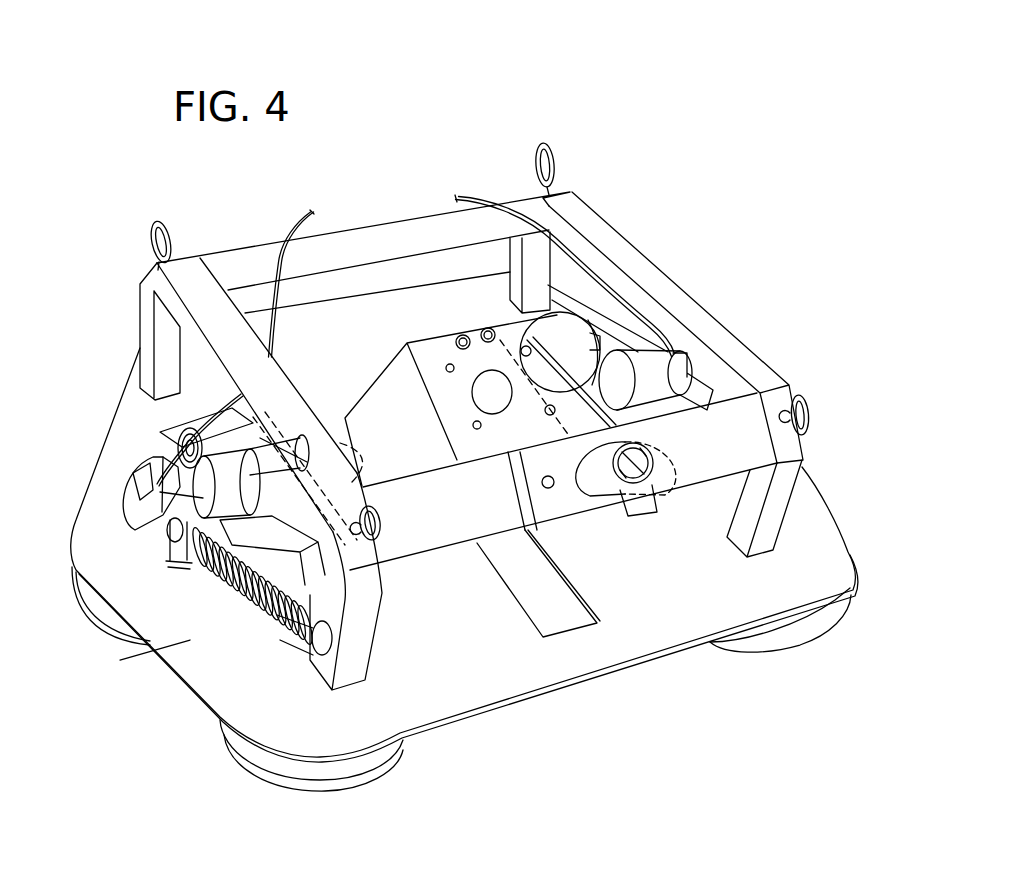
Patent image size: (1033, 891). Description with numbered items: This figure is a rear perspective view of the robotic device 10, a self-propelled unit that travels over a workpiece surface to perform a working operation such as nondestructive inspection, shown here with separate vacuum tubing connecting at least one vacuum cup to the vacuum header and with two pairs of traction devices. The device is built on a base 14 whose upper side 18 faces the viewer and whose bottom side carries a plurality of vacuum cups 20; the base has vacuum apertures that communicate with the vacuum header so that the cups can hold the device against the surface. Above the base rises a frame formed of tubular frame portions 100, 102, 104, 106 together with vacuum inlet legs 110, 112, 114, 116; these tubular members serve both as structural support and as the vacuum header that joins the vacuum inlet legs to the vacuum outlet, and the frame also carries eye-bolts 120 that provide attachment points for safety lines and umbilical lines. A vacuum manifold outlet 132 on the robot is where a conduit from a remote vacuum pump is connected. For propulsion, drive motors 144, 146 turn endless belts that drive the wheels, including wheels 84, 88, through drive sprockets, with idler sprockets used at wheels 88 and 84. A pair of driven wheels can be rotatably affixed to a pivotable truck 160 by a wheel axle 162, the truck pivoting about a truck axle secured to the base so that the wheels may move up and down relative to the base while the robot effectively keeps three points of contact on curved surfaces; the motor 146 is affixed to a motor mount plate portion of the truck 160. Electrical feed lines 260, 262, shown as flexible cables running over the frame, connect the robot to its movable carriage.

The robotic device 10 is at (356, 170).
The base 14 is at (186, 687).
The upper side 18 is at (187, 637).
The vacuum cups 20 is at (108, 637).
The wheel 84 is at (672, 495).
The wheel 88 is at (240, 590).
The tubular frame portion 100 is at (632, 267).
The tubular frame portion 102 is at (282, 378).
The tubular frame portion 104 is at (490, 504).
The tubular frame portion 106 is at (264, 249).
The vacuum inlet leg 110 is at (358, 650).
The vacuum inlet leg 112 is at (785, 495).
The vacuum inlet leg 114 is at (140, 328).
The vacuum inlet leg 116 is at (525, 285).
The eye-bolts 120 is at (148, 241).
The vacuum manifold outlet 132 is at (605, 503).
The drive motor 144 is at (670, 354).
The drive motor 146 is at (142, 492).
The pivotable truck 160 is at (362, 438).
The wheel axle 162 is at (552, 419).
The electrical feed line 260 is at (478, 199).
The electrical feed line 262 is at (298, 221).